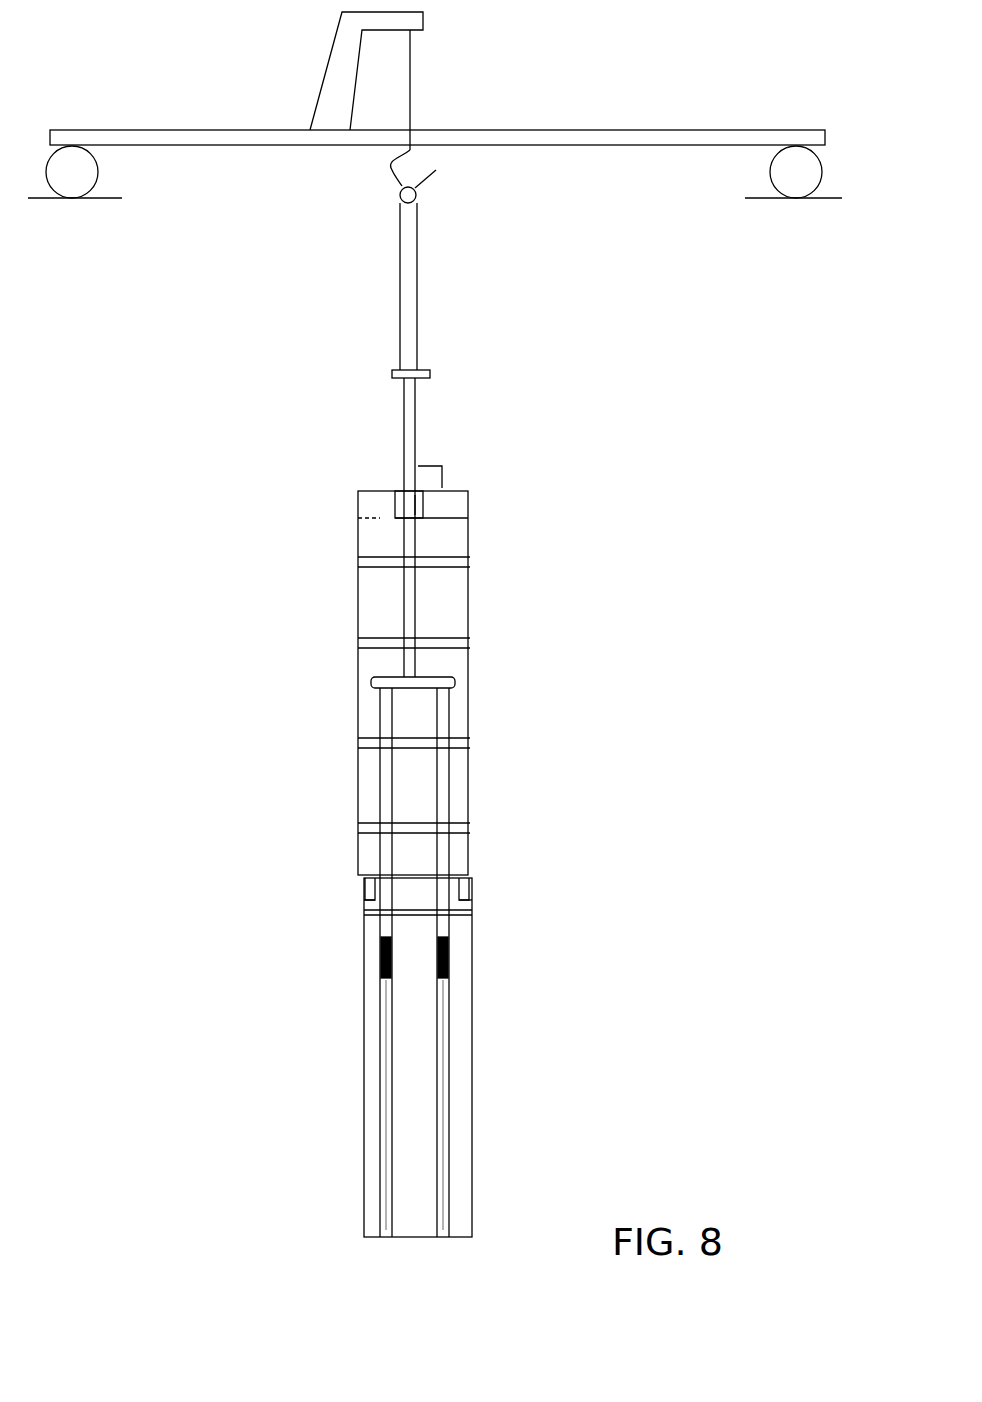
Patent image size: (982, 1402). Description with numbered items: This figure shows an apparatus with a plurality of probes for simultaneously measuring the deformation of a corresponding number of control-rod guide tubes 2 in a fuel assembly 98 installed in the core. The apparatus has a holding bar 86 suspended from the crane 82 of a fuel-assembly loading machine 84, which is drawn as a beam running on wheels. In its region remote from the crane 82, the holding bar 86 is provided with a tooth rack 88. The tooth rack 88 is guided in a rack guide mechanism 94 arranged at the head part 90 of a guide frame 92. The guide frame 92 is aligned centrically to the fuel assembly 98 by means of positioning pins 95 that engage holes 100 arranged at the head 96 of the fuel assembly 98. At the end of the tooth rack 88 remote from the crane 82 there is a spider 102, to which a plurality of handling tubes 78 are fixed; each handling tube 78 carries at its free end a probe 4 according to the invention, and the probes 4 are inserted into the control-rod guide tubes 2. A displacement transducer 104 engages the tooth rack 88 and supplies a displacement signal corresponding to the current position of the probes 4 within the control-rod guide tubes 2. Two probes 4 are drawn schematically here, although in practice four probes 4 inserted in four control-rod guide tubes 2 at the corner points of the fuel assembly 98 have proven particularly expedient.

The crane 82 is at (418, 22).
The fuel-assembly loading machine 84 is at (283, 137).
The holding bar 86 is at (418, 303).
The tooth rack 88 is at (418, 423).
The displacement transducer 104 is at (442, 466).
The rack guide mechanism 94 is at (420, 503).
The head part 90 is at (435, 512).
The guide frame 92 is at (468, 618).
The spider 102 is at (371, 683).
The handling tubes 78 is at (440, 850).
The positioning pins 95 is at (365, 880).
The head 96 is at (362, 905).
The holes 100 is at (470, 883).
The probe 4 is at (391, 970).
The control-rod guide tubes 2 is at (383, 1060).
The fuel assembly 98 is at (373, 1114).